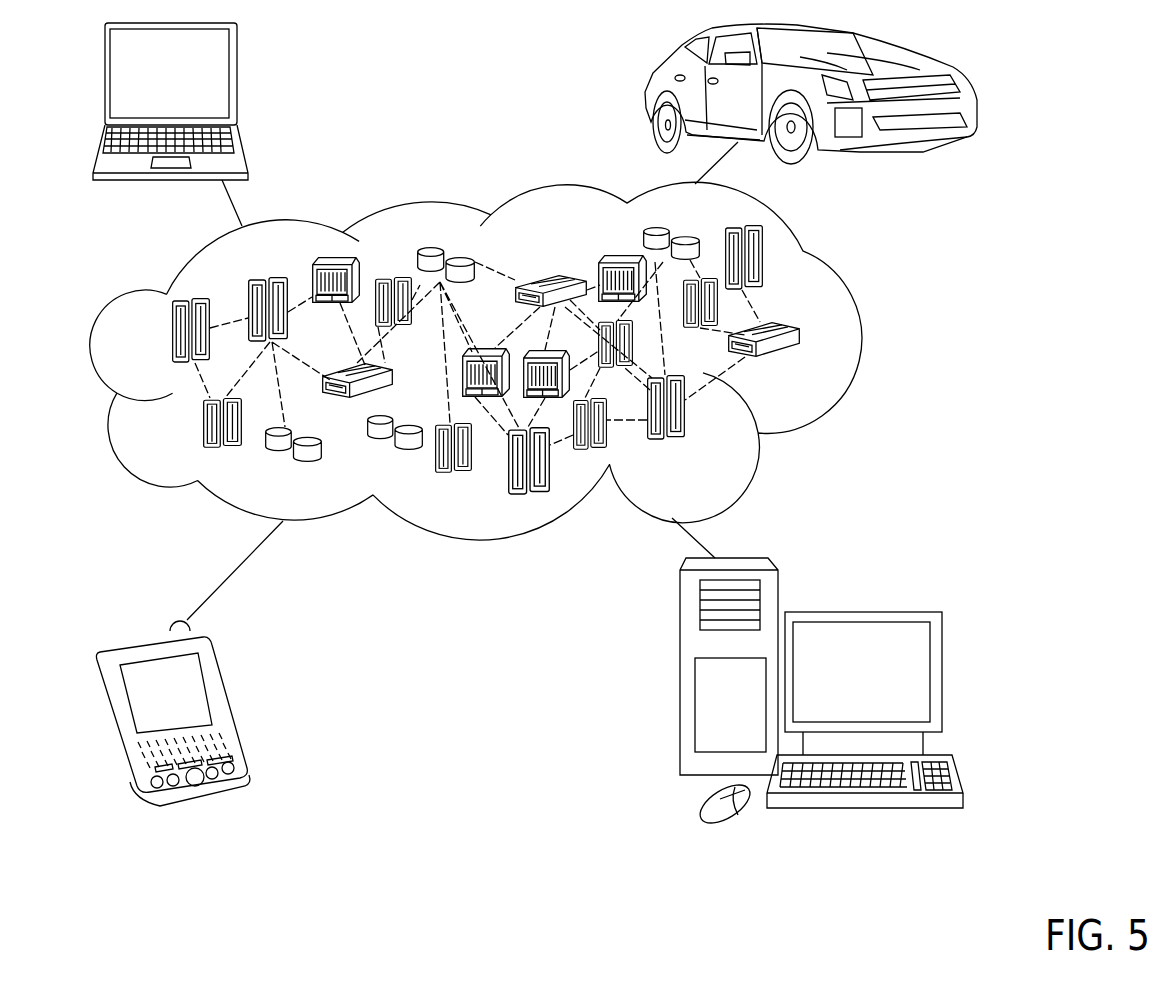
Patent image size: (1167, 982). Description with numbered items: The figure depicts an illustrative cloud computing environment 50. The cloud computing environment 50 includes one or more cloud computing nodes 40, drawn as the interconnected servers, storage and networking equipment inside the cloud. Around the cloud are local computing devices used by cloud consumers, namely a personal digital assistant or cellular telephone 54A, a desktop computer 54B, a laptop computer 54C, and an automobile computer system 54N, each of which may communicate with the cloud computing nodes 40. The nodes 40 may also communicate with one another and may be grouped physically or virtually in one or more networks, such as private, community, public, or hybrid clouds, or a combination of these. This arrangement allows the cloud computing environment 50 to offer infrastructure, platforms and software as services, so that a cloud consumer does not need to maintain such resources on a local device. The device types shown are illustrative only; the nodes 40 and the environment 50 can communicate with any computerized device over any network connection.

The cloud computing environment 50 is at (857, 335).
The cloud computing node 40 is at (803, 367).
The personal digital assistant or cellular telephone 54A is at (228, 703).
The desktop computer 54B is at (858, 612).
The laptop computer 54C is at (236, 82).
The automobile computer system 54N is at (648, 93).